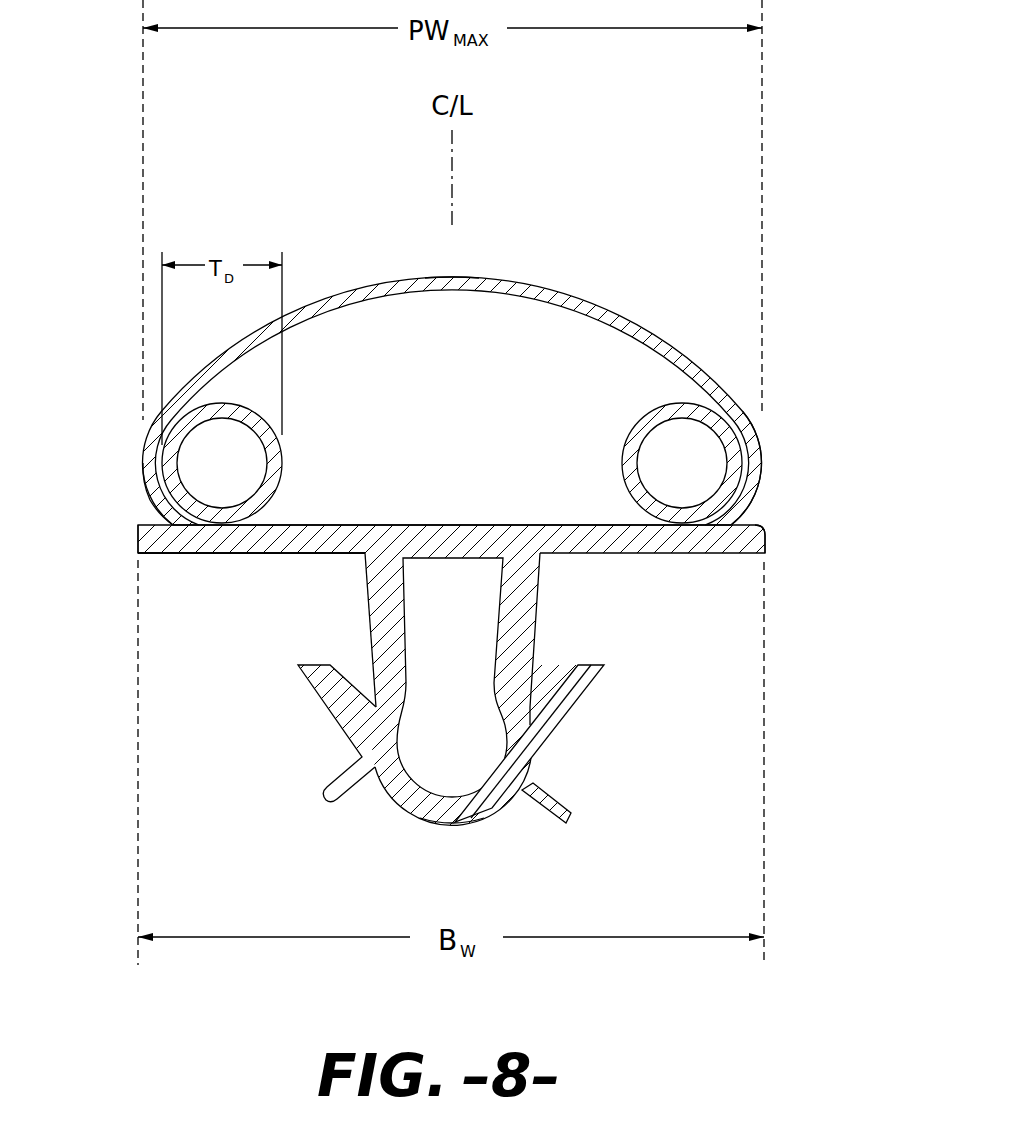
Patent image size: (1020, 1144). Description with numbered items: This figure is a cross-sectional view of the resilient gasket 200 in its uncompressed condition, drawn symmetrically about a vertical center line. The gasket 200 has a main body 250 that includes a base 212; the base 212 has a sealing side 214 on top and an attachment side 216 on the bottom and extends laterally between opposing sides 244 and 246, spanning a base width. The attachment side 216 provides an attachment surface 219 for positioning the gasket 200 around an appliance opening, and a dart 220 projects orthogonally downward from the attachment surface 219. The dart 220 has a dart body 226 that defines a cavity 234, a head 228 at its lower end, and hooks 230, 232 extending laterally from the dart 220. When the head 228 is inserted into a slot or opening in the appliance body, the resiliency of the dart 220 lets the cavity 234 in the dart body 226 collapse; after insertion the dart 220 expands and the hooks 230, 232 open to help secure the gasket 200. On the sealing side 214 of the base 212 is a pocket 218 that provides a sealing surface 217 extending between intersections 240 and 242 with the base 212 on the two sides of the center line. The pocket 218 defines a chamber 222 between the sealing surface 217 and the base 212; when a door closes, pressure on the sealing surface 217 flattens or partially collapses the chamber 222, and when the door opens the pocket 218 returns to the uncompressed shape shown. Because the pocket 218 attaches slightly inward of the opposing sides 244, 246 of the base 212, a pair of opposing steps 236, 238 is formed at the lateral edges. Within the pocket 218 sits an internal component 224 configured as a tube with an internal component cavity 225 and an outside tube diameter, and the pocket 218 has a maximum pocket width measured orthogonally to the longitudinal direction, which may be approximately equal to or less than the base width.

The gasket 200 is at (461, 522).
The base 212 is at (632, 545).
The sealing side 214 is at (456, 523).
The attachment side 216 is at (203, 560).
The sealing surface 217 is at (454, 275).
The pocket 218 is at (343, 298).
The attachment surface 219 is at (323, 562).
The dart 220 is at (433, 712).
The chamber 222 is at (427, 369).
The internal component 224 is at (283, 476).
The internal component cavity 225 is at (198, 481).
The dart body 226 is at (524, 640).
The head 228 is at (454, 829).
The hook 230 is at (318, 682).
The hook 232 is at (590, 676).
The cavity 234 is at (427, 757).
The step 236 is at (136, 540).
The step 238 is at (754, 548).
The intersection 240 is at (153, 512).
The intersection 242 is at (752, 508).
The opposing side 244 is at (132, 558).
The opposing side 246 is at (746, 560).
The main body 250 is at (202, 630).